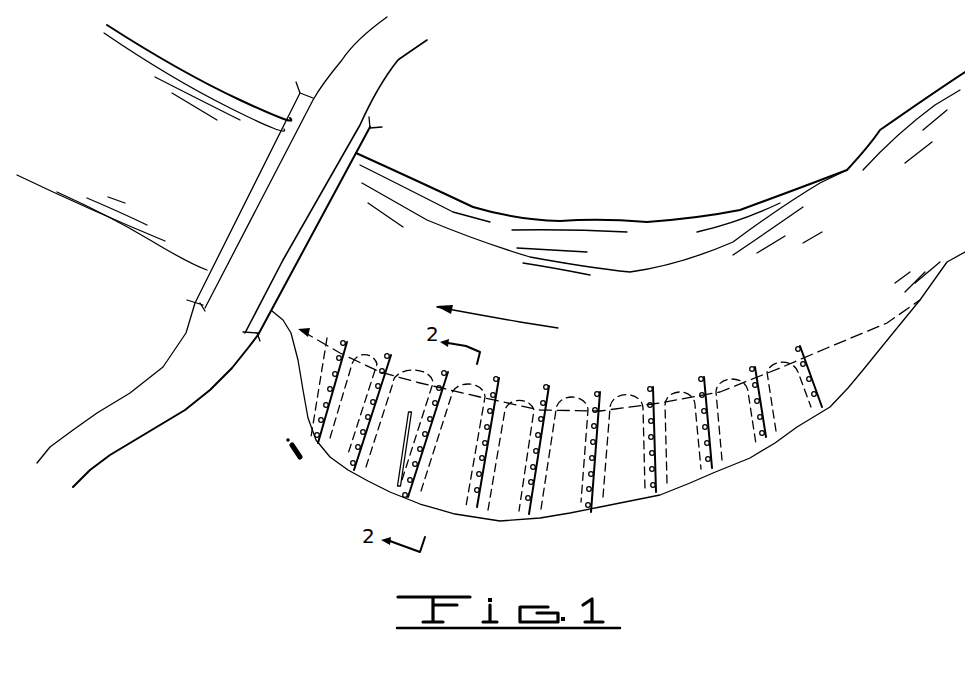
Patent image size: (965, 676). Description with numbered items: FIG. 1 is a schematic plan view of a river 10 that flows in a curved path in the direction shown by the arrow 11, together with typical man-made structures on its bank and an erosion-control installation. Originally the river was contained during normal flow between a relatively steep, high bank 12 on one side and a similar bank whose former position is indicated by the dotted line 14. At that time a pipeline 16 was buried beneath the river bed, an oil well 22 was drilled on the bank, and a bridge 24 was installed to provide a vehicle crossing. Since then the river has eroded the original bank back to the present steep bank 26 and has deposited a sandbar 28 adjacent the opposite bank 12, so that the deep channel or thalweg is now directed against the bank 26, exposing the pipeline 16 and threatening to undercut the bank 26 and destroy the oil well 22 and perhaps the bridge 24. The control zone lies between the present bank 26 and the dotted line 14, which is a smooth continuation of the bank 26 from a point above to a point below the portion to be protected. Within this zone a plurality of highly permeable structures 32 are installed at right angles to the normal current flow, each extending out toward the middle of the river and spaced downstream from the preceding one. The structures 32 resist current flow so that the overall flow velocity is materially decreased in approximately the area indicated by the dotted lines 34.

The river 10 is at (883, 170).
The arrow 11 is at (508, 322).
The bank 12 is at (677, 220).
The dotted line 14 is at (850, 345).
The pipeline 16 is at (397, 478).
The oil well 22 is at (290, 456).
The bridge 24 is at (186, 310).
The bank 26 is at (620, 500).
The sandbar 28 is at (727, 231).
The permeable structures 32 is at (442, 366).
The dotted lines 34 is at (574, 508).